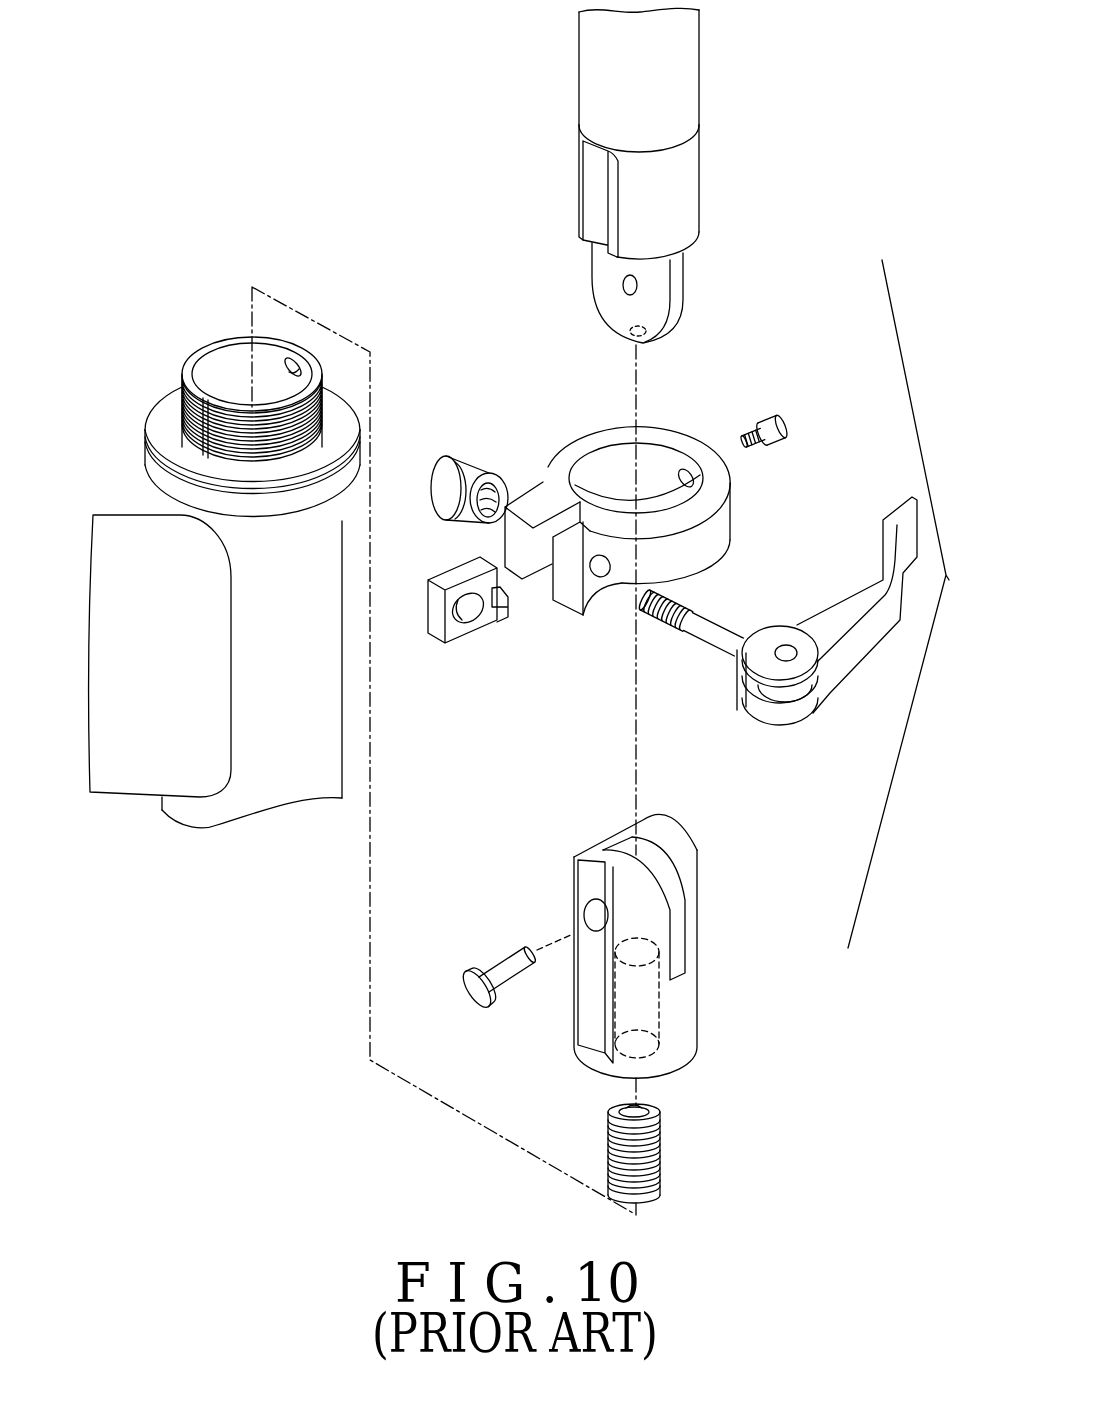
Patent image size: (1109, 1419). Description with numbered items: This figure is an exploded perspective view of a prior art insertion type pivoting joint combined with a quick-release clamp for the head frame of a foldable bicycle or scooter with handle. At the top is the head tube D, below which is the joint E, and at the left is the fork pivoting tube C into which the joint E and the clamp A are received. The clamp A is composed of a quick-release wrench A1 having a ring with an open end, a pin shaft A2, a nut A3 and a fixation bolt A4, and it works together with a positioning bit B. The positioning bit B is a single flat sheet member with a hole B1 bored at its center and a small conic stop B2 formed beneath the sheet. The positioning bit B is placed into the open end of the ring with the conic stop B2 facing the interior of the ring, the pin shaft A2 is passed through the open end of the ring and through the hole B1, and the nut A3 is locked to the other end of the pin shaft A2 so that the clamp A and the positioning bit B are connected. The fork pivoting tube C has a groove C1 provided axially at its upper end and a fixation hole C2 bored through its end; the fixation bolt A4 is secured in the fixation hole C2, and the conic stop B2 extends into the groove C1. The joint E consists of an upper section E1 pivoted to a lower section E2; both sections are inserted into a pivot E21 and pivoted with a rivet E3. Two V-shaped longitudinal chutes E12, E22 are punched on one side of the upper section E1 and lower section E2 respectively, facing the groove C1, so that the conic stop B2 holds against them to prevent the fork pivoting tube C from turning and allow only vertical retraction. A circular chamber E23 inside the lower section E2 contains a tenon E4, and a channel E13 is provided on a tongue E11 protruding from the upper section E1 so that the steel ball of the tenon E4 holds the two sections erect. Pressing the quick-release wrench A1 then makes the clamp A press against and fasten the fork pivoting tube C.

The head tube D is at (695, 58).
The joint E is at (906, 604).
The upper section E1 is at (688, 234).
The tongue E11 is at (668, 270).
The chute E12 is at (597, 195).
The channel E13 is at (628, 331).
The lower section E2 is at (673, 948).
The pivot E21 is at (668, 880).
The chute E22 is at (588, 988).
The circular chamber E23 is at (623, 1005).
The rivet E3 is at (503, 975).
The tenon E4 is at (655, 1160).
The clamp A is at (572, 453).
The quick-release wrench A1 is at (845, 660).
The pin shaft A2 is at (690, 630).
The nut A3 is at (448, 478).
The fixation bolt A4 is at (776, 409).
The positioning bit B is at (490, 623).
The hole B1 is at (472, 611).
The conic stop B2 is at (505, 607).
The fork pivoting tube C is at (224, 533).
The groove C1 is at (183, 378).
The fixation hole C2 is at (296, 364).